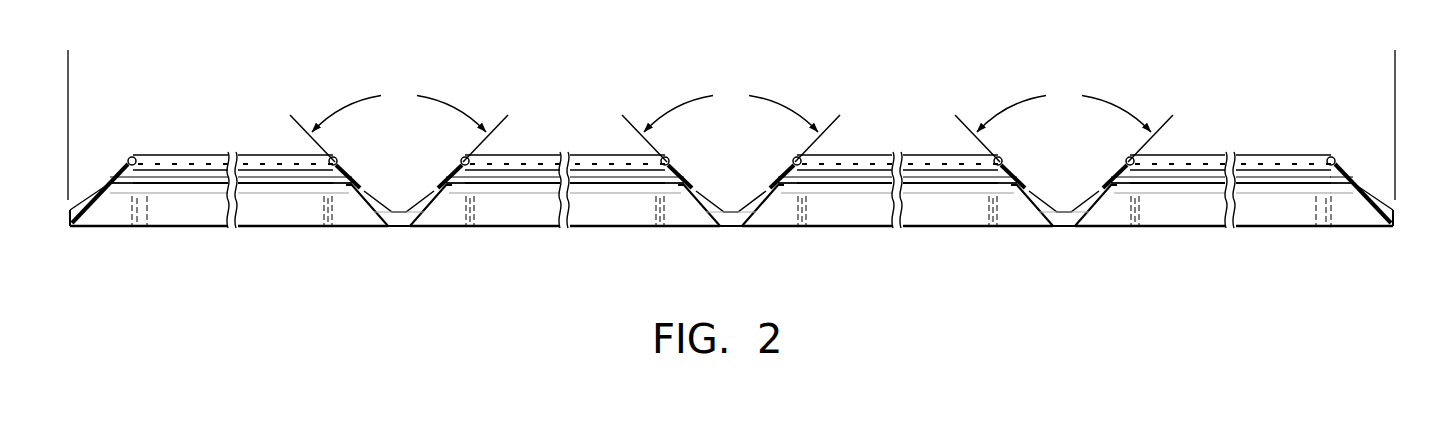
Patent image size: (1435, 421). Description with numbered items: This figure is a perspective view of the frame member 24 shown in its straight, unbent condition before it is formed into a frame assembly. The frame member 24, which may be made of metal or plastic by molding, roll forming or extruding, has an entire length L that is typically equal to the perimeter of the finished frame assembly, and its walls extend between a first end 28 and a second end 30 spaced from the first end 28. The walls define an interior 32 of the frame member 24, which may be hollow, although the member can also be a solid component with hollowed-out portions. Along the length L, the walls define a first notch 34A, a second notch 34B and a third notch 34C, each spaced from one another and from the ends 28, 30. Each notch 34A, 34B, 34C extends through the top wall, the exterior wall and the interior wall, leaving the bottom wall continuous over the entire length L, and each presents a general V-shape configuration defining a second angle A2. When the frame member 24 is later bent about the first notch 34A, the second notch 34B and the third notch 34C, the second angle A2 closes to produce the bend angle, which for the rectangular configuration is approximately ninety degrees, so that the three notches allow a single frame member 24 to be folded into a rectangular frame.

The frame member 24 is at (167, 216).
The first end 28 is at (66, 242).
The second end 30 is at (1398, 242).
The interior 32 is at (88, 195).
The first notch 34A is at (463, 102).
The second notch 34B is at (801, 109).
The third notch 34C is at (1134, 104).
The second angle A2 is at (731, 108).
The entire length L is at (1394, 68).